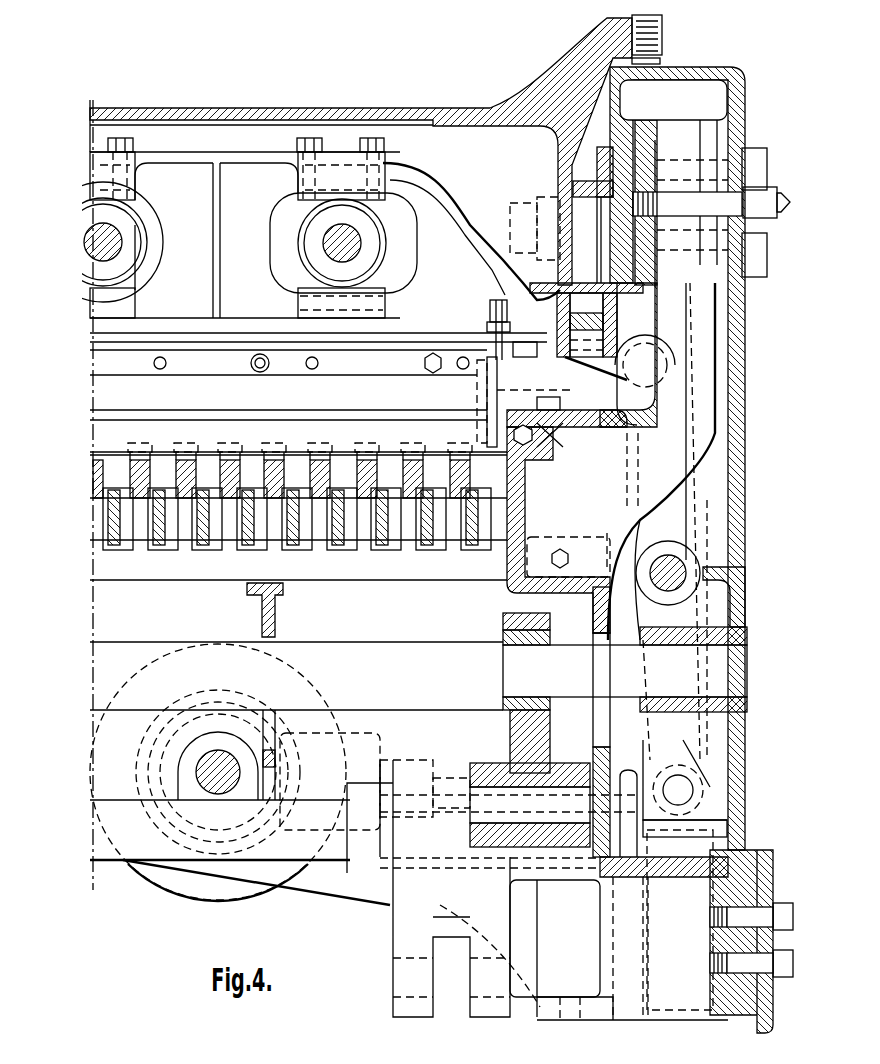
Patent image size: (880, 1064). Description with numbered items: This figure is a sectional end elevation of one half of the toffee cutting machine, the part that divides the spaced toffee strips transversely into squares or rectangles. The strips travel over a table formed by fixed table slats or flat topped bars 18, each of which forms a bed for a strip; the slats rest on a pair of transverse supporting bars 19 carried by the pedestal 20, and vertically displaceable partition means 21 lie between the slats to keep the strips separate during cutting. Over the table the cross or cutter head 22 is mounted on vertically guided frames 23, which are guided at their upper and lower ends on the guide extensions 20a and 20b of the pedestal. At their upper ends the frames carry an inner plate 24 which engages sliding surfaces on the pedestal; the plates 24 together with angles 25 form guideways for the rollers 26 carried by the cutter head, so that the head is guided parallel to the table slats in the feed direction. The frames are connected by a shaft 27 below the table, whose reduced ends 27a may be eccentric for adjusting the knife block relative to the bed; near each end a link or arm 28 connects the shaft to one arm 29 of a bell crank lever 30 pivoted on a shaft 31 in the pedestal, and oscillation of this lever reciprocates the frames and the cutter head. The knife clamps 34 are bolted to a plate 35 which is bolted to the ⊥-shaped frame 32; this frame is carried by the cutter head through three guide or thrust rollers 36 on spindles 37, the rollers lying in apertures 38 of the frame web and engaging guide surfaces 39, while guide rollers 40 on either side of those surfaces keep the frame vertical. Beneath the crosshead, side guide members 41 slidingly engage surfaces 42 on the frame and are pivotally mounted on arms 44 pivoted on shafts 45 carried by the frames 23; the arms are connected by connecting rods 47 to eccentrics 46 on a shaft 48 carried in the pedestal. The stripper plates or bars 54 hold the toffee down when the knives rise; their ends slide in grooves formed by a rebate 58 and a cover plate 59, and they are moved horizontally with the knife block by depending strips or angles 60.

The table slats or flat topped bars 18 is at (480, 500).
The transverse supporting bars 19 is at (367, 567).
The pedestal 20 is at (523, 520).
The upper guide extension 20a is at (681, 183).
The lower guide extension 20b is at (687, 877).
The partition means 21 is at (263, 500).
The cross or cutter head 22 is at (478, 108).
The vertically guided frames 23 is at (740, 390).
The inner plate 24 is at (660, 270).
The angles 25 is at (613, 155).
The rollers 26 is at (587, 203).
The shaft 27 is at (322, 642).
The reduced ends of the shaft 27a is at (735, 670).
The link or arm 28 is at (513, 731).
The arm of bell crank lever 29 is at (467, 760).
The bell crank lever 30 is at (423, 887).
The shaft 31 is at (330, 858).
The ⊥-shaped frame 32 is at (460, 190).
The clamps 34 is at (300, 365).
The plate 35 is at (510, 345).
The guide or thrust rollers 36 is at (267, 272).
The spindles 37 is at (330, 240).
The apertures 38 is at (267, 247).
The guide surfaces 39 is at (297, 182).
The guide rollers 40 is at (375, 195).
The side guide members 41 is at (657, 352).
The surfaces 42 is at (617, 328).
The arms 44 is at (640, 400).
The shafts 45 is at (683, 565).
The eccentrics 46 is at (170, 800).
The connecting rods 47 is at (655, 800).
The shaft 48 is at (218, 795).
The stripper plates or bars 54 is at (143, 500).
The rebate 58 is at (543, 463).
The cover plate 59 is at (553, 430).
The depending strips or angles 60 is at (562, 392).